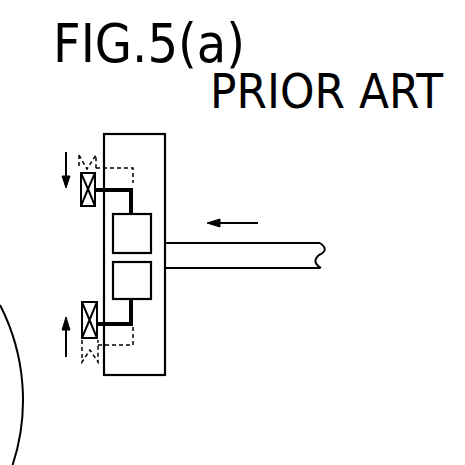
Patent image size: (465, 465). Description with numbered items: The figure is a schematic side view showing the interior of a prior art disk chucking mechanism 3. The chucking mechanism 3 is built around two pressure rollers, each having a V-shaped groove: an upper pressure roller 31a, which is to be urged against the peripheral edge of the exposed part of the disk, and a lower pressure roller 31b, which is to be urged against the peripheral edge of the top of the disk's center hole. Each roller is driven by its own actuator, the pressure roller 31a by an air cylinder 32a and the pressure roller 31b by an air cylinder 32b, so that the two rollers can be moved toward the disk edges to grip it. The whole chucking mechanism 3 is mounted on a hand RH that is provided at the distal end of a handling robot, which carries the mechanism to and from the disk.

The disk chucking mechanism 3 is at (212, 115).
The pressure roller 31a is at (80, 157).
The pressure roller 31b is at (82, 340).
The air cylinder 32a is at (138, 230).
The air cylinder 32b is at (140, 286).
The hand RH is at (298, 243).